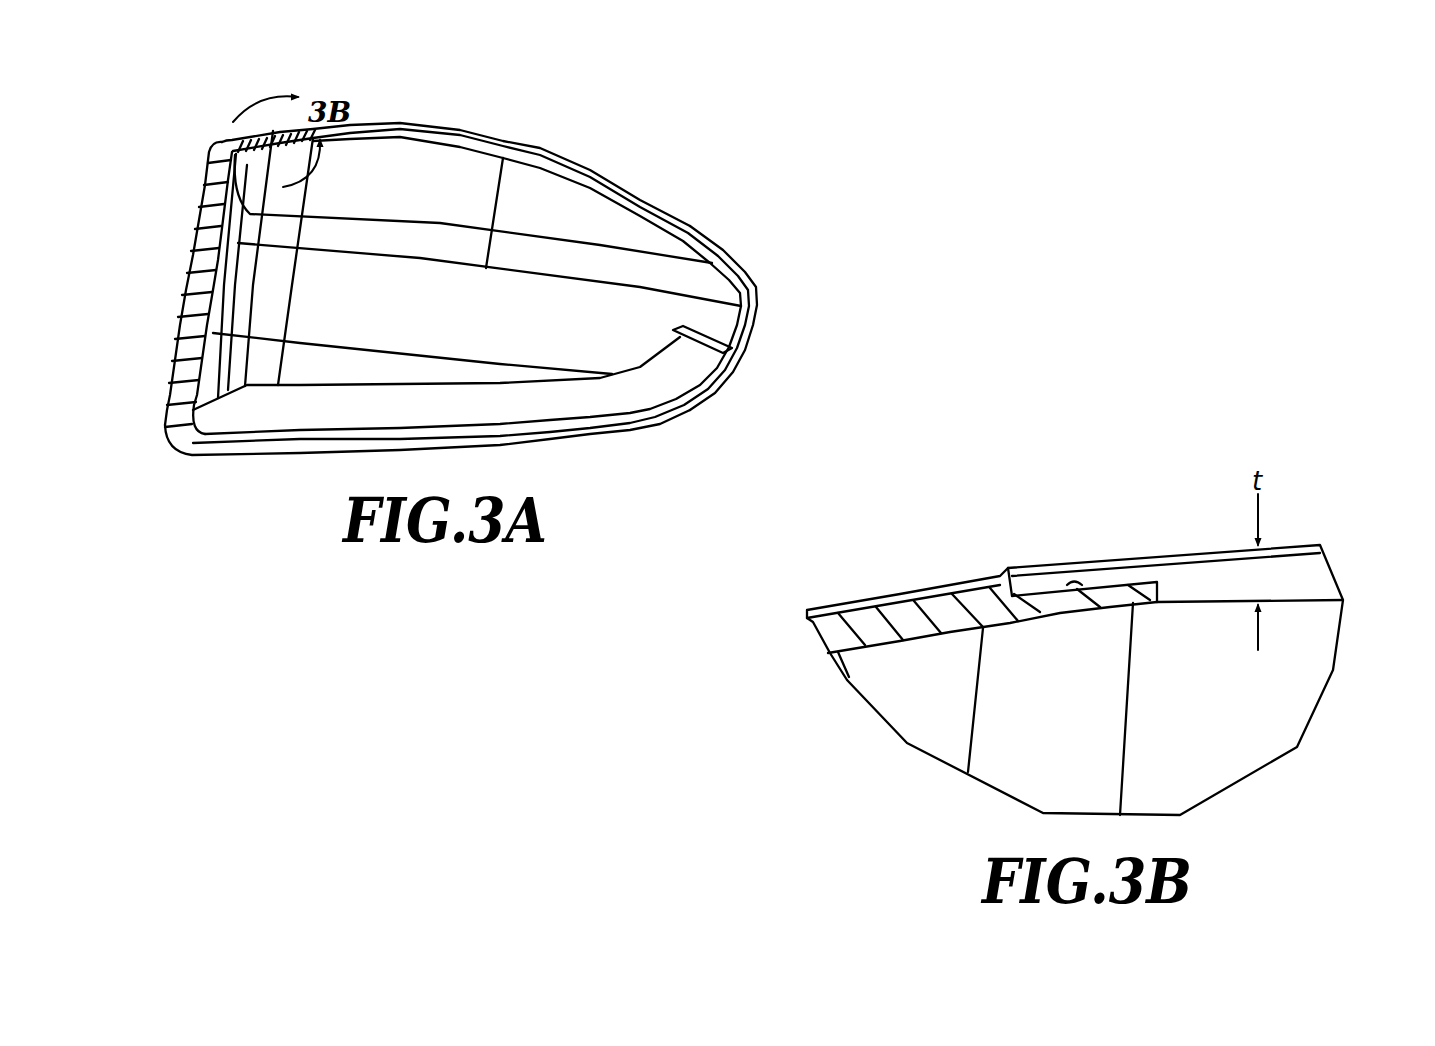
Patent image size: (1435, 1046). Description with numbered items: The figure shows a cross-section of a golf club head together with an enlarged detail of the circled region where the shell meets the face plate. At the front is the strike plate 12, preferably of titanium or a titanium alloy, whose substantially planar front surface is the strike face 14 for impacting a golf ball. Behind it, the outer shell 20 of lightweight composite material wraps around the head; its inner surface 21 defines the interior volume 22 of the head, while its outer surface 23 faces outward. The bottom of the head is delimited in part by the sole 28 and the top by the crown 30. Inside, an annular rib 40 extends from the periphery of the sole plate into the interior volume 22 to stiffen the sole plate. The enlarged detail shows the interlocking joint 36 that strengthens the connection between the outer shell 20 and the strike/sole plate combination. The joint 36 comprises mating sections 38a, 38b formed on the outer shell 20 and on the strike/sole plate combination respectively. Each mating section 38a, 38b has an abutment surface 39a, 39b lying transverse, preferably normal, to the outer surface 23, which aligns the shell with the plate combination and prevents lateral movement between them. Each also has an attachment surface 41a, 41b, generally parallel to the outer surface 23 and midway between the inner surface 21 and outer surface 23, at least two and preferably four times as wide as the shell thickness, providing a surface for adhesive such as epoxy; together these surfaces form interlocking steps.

In FIG. 3A, the strike plate 12 is at (445, 265).
In FIG. 3B, the strike plate 12 is at (1090, 624).
In FIG. 3A, the strike face 14 is at (188, 263).
In FIG. 3A, the outer shell 20 is at (473, 125).
In FIG. 3B, the outer shell 20 is at (1312, 543).
In FIG. 3A, the inner surface 21 is at (597, 195).
In FIG. 3B, the inner surface 21 is at (1303, 603).
In FIG. 3A, the interior volume 22 is at (432, 317).
In FIG. 3A, the outer surface 23 is at (707, 230).
In FIG. 3A, the sole 28 is at (612, 440).
In FIG. 3A, the crown 30 is at (559, 136).
In FIG. 3A, the interlocking joint 36 is at (273, 126).
In FIG. 3B, the interlocking joint 36 is at (990, 530).
In FIG. 3B, the mating section 38a is at (1095, 574).
In FIG. 3B, the mating section 38b is at (1037, 613).
In FIG. 3B, the abutment surface 39a is at (985, 590).
In FIG. 3B, the abutment surface 39b is at (1012, 592).
In FIG. 3A, the annular rib 40 is at (331, 382).
In FIG. 3B, the attachment surface 41a is at (1165, 586).
In FIG. 3B, the attachment surface 41b is at (1079, 604).